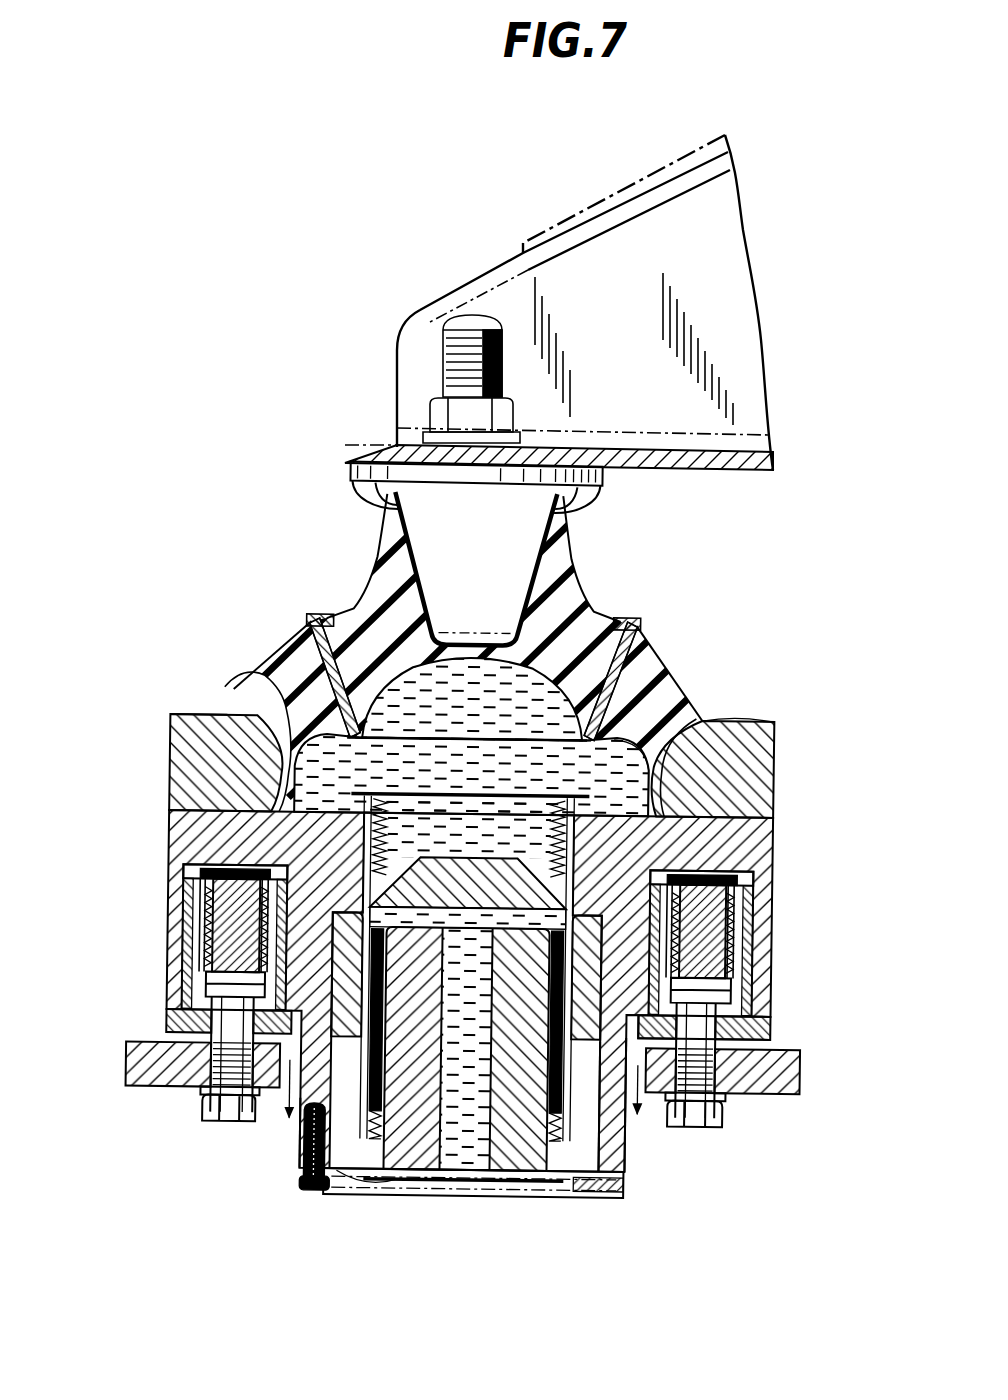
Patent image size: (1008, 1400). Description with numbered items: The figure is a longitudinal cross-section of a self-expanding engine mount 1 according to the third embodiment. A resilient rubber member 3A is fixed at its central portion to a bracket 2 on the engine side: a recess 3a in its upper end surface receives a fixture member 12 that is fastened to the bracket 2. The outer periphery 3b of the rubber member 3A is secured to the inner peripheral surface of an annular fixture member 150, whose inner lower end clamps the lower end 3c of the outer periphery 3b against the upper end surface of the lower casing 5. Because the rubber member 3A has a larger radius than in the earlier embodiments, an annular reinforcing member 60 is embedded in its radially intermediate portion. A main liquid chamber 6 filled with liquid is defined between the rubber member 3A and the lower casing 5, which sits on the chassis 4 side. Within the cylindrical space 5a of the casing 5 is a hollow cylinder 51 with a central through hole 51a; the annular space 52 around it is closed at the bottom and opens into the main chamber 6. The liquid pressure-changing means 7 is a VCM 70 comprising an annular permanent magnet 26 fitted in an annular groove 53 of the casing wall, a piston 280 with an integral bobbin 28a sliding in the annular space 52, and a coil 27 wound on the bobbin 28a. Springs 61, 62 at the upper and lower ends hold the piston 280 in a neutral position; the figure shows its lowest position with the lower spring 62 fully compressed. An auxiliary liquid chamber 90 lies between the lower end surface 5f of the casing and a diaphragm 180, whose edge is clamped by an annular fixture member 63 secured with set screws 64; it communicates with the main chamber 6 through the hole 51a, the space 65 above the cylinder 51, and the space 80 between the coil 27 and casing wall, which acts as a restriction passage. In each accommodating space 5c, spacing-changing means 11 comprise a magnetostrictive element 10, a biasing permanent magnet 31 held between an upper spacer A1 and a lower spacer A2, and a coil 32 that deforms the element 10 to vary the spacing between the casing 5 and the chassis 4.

The self-expanding engine mount 1 is at (672, 610).
The bracket 2 is at (757, 297).
The resilient rubber member 3A is at (360, 610).
The recess 3a is at (552, 522).
The outer periphery 3b is at (665, 762).
The lower end 3c is at (696, 812).
The chassis 4 is at (138, 1092).
The lower casing 5 is at (762, 862).
The cylindrical space 5a is at (187, 745).
The accommodating space 5c is at (228, 985).
The lower end surface 5f is at (606, 1198).
The main liquid chamber 6 is at (588, 612).
The liquid pressure-changing means 7 is at (265, 795).
The magnetostrictive element 10 is at (235, 900).
The spacing-changing means 11 is at (192, 930).
The fixture member 12 is at (532, 565).
The annular permanent magnet 26 is at (748, 936).
The coil 27 is at (300, 1132).
The bobbin 28a is at (376, 1180).
The biasing permanent magnet 31 is at (200, 871).
The coil 32 is at (166, 1000).
The hollow cylinder 51 is at (522, 1198).
The central through hole 51a is at (480, 1140).
The annular space 52 is at (592, 1172).
The annular groove 53 is at (240, 950).
The annular reinforcing member 60 is at (312, 640).
The spring 61 is at (340, 700).
The spring 62 is at (345, 1196).
The annular fixture member 63 is at (320, 1190).
The set screws 64 is at (310, 1190).
The space 65 is at (355, 855).
The VCM 70 is at (600, 1100).
The space 80 is at (596, 1085).
The auxiliary liquid chamber 90 is at (428, 1198).
The annular fixture member 150 is at (757, 722).
The diaphragm 180 is at (463, 1198).
The piston 280 is at (700, 850).
The upper spacer A1 is at (655, 888).
The lower spacer A2 is at (772, 1013).